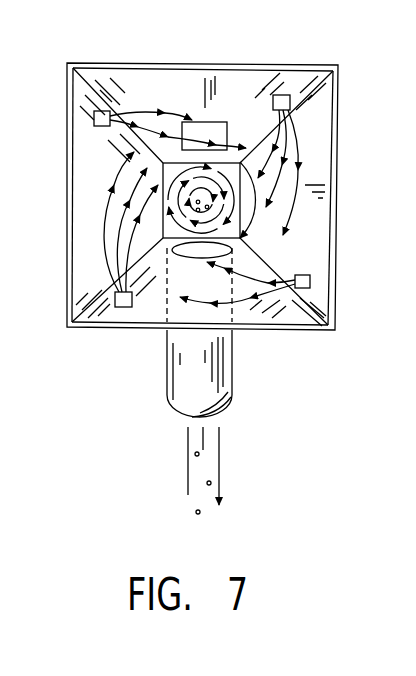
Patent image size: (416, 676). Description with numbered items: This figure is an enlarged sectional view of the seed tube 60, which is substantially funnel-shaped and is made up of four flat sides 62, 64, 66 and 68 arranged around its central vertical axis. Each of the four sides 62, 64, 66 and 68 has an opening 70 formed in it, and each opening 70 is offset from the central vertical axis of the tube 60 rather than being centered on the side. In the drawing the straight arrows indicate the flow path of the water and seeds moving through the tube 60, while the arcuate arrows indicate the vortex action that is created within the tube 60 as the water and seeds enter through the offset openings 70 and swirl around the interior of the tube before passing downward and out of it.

The tube 60 is at (340, 156).
The flat side 62 is at (67, 190).
The flat side 64 is at (293, 328).
The flat side 66 is at (331, 206).
The flat side 68 is at (232, 64).
The opening 70 is at (106, 117).